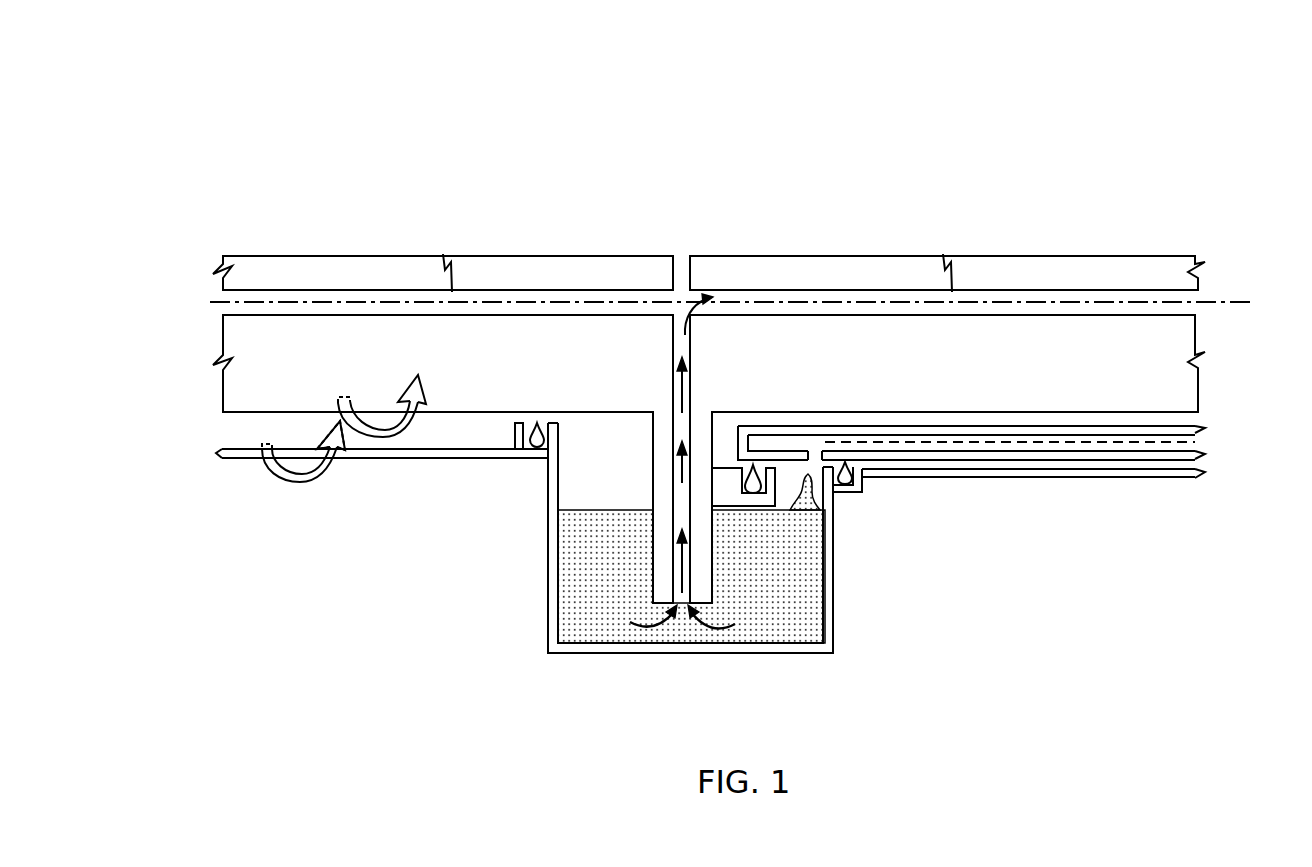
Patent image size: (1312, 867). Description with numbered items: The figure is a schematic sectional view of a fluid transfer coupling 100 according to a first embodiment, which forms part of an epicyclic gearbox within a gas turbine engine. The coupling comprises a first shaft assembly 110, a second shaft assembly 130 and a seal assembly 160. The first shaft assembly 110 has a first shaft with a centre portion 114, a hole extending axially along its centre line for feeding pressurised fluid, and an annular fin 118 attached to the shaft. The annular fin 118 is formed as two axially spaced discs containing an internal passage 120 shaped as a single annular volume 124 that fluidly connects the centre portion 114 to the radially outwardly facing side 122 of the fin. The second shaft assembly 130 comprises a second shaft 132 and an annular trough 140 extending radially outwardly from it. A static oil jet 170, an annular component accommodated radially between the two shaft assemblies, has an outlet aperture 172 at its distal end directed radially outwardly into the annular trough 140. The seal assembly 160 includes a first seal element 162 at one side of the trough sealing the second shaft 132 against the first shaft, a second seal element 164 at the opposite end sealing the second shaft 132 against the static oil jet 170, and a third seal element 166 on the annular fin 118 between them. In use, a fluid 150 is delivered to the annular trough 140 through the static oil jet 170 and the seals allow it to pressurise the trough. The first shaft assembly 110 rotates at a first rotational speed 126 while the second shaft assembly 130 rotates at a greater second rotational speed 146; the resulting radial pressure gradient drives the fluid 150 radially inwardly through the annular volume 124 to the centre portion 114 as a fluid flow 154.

The fluid transfer coupling 100 is at (1200, 128).
The first shaft assembly 110 is at (200, 400).
The centre portion 114 is at (1202, 302).
The annular fin 118 is at (702, 543).
The internal passage 120 is at (683, 594).
The radially outwardly facing side 122 is at (665, 601).
The annular volume 124 is at (680, 517).
The first rotational speed 126 is at (446, 368).
The second shaft assembly 130 is at (1143, 492).
The second shaft 132 is at (1190, 478).
The annular trough 140 is at (548, 622).
The second rotational speed 146 is at (303, 481).
The fluid 150 is at (760, 628).
The fluid flow 154 is at (684, 388).
The seal assembly 160 is at (540, 425).
The first seal element 162 is at (533, 447).
The second seal element 164 is at (855, 482).
The third seal element 166 is at (757, 483).
The static oil jet 170 is at (1055, 453).
The outlet aperture 172 is at (818, 443).